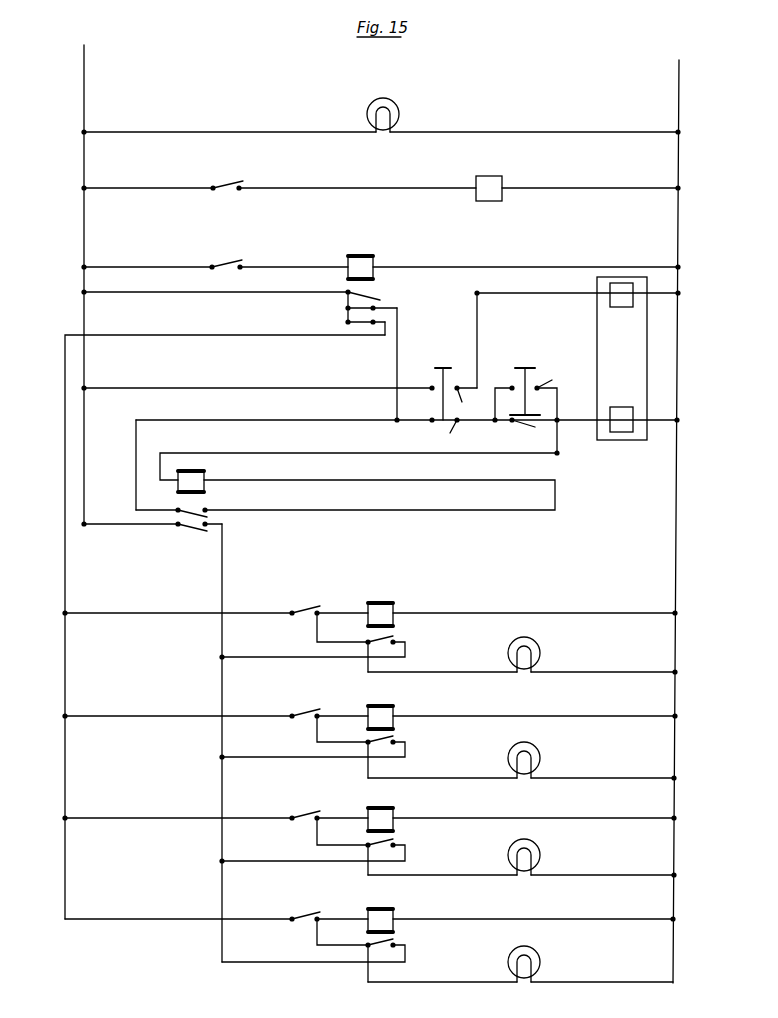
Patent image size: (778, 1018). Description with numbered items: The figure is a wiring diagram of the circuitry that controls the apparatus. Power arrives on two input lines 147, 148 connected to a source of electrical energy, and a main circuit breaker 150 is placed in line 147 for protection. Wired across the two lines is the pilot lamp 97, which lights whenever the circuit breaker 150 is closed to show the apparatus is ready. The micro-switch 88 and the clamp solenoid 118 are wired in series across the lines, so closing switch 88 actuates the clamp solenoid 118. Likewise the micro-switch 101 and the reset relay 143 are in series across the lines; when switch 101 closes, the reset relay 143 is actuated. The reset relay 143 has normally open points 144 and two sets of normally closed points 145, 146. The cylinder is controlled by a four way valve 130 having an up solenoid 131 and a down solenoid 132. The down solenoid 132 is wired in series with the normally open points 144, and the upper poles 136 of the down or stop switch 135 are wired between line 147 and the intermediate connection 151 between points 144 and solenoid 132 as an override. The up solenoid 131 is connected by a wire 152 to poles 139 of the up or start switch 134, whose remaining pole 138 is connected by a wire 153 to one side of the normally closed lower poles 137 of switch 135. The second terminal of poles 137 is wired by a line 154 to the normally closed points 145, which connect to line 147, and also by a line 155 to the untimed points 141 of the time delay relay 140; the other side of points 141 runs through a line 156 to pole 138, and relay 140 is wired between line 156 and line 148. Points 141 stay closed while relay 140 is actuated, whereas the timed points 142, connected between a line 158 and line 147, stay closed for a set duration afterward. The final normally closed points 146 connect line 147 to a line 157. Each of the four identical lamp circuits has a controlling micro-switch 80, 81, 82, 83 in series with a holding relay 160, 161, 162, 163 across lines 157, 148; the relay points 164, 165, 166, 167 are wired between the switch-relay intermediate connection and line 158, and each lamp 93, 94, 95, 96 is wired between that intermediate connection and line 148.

The input line 147 is at (84, 86).
The input line 148 is at (683, 118).
The main circuit breaker 150 is at (84, 132).
The pilot lamp 97 is at (386, 92).
The micro-switch 88 is at (221, 186).
The clamp solenoid 118 is at (493, 166).
The micro-switch 101 is at (240, 265).
The reset relay 143 is at (372, 252).
The normally open points 144 is at (373, 297).
The normally closed points 145 is at (376, 310).
The normally closed points 146 is at (347, 322).
The intermediate connection 151 is at (507, 294).
The line 154 is at (398, 338).
The line 157 is at (65, 590).
The stop switch 135 is at (443, 368).
The upper poles 136 is at (470, 400).
The lower poles 137 is at (461, 436).
The wire 153 is at (482, 422).
The pole 138 is at (535, 428).
The start switch 134 is at (537, 379).
The poles 139 is at (546, 388).
The four way valve 130 is at (597, 330).
The up solenoid 131 is at (635, 415).
The down solenoid 132 is at (622, 283).
The wire 152 is at (575, 425).
The line 155 is at (311, 419).
The time delay relay 140 is at (190, 468).
The line 156 is at (428, 512).
The untimed contact points 141 is at (180, 507).
The timed contact points 142 is at (180, 528).
The line 158 is at (222, 599).
The micro-switch 83 is at (307, 611).
The holding relay 163 is at (393, 603).
The relay points 167 is at (396, 641).
The lamp 96 is at (508, 653).
The micro-switch 82 is at (306, 714).
The holding relay 162 is at (393, 706).
The relay points 166 is at (388, 742).
The lamp 95 is at (508, 757).
The micro-switch 81 is at (306, 816).
The holding relay 161 is at (393, 808).
The relay points 165 is at (385, 845).
The lamp 94 is at (508, 855).
The micro-switch 80 is at (310, 917).
The holding relay 160 is at (393, 910).
The relay points 164 is at (385, 945).
The lamp 93 is at (520, 964).